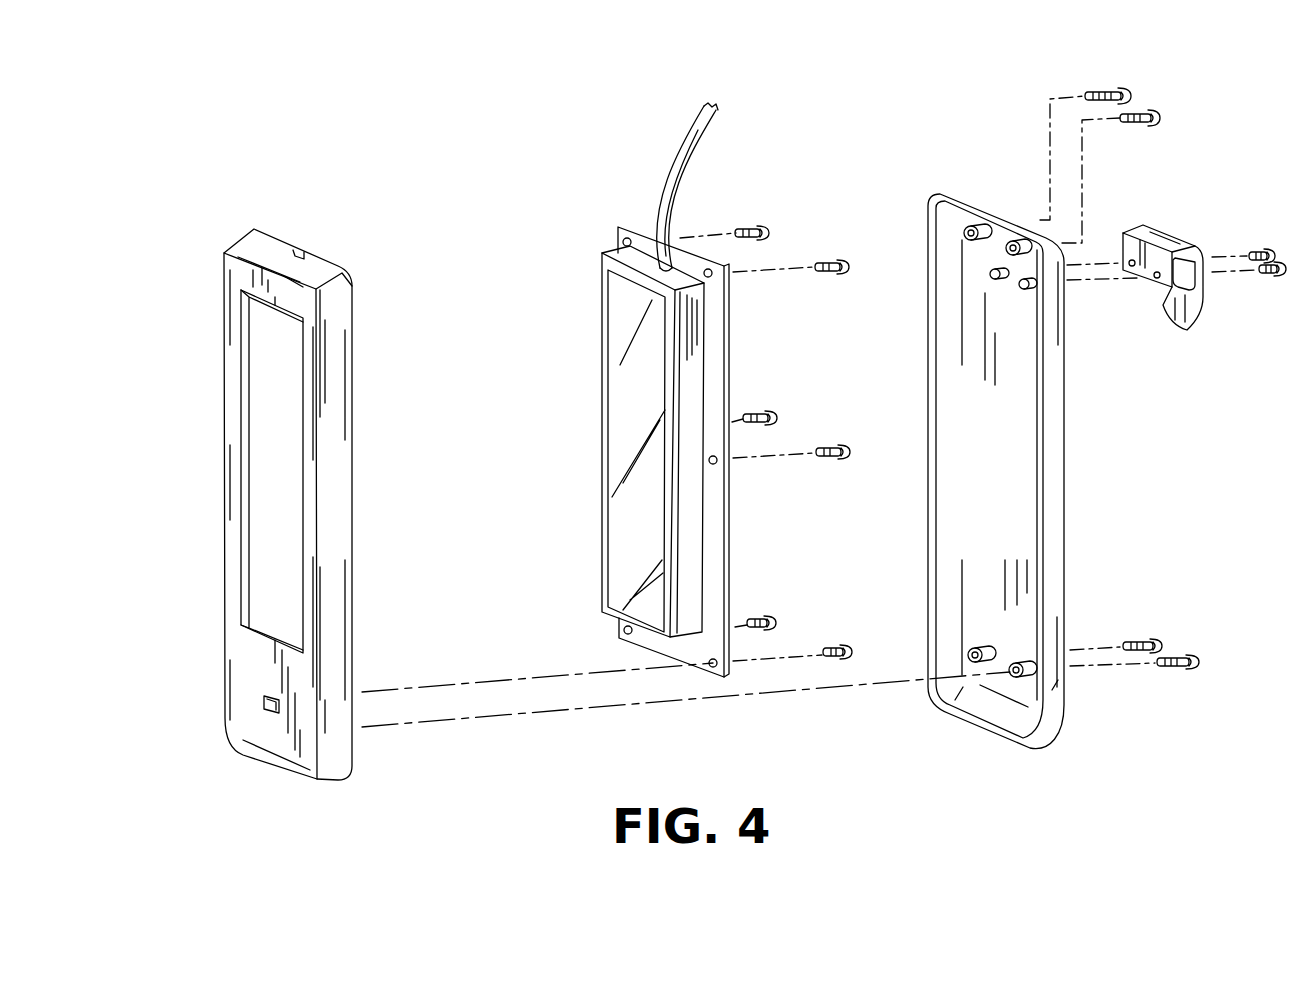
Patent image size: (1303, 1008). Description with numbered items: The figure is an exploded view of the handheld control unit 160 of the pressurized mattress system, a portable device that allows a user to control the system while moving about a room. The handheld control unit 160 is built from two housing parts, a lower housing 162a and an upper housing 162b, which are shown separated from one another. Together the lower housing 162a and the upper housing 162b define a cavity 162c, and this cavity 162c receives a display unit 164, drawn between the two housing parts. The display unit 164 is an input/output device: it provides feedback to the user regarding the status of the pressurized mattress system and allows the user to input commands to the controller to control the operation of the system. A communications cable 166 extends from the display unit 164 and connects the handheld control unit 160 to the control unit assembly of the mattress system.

The handheld control unit 160 is at (434, 160).
The lower housing 162a is at (1062, 535).
The upper housing 162b is at (237, 543).
The cavity 162c is at (973, 413).
The display unit 164 is at (618, 368).
The communications cable 166 is at (690, 148).